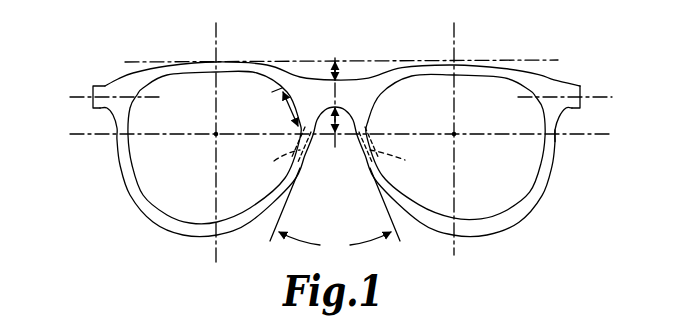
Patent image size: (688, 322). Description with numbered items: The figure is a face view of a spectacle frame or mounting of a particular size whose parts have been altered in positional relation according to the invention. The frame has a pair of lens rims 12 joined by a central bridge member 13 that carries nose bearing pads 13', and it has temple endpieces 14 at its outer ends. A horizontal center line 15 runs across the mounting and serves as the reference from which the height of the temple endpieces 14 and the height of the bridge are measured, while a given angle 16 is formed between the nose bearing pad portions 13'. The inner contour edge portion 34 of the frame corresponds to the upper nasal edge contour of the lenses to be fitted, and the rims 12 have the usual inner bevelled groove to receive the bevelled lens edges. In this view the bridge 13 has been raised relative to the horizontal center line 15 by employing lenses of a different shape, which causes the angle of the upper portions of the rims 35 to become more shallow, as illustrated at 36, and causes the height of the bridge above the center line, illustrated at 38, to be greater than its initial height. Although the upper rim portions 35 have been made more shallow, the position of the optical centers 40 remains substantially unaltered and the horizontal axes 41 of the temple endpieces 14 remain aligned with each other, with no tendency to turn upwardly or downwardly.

The lens rims 12 is at (167, 227).
The central bridge member 13 is at (336, 123).
The nose bearing pads 13' is at (341, 161).
The temple endpieces 14 is at (105, 85).
The horizontal center line 15 is at (576, 133).
The angle between nose bearing pad portions 16 is at (335, 211).
The inner contour edge portion 34 is at (290, 108).
The upper portions of the rims 35 is at (242, 70).
The shallower angle of upper rim portions 36 is at (333, 62).
The height of bridge above horizontal center line 38 is at (331, 120).
The optical centers 40 is at (216, 133).
The horizontal axes of temple endpieces 41 is at (93, 97).